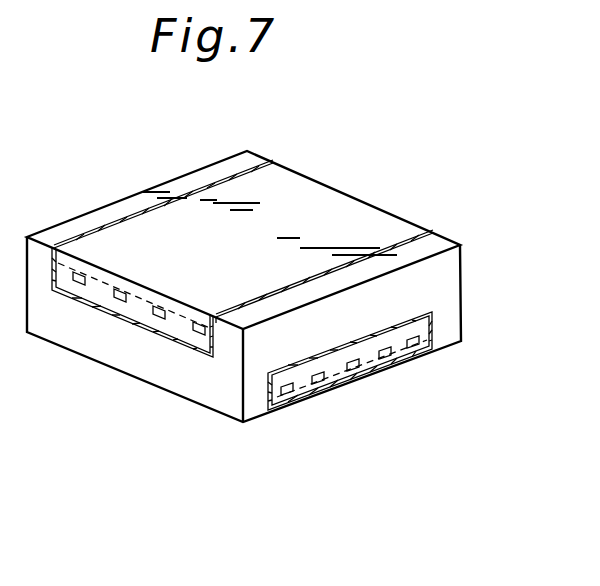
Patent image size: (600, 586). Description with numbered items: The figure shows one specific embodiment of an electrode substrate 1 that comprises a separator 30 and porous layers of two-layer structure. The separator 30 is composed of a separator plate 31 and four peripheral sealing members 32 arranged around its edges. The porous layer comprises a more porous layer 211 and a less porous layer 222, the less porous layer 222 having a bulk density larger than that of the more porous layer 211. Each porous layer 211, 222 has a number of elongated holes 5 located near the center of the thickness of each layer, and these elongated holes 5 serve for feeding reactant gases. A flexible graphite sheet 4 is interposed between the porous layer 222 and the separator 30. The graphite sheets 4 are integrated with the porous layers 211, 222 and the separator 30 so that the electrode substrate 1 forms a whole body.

The electrode substrate 1 is at (420, 213).
The flexible graphite sheet 4 is at (268, 163).
The elongated holes 5 is at (118, 292).
The separator 30 is at (468, 287).
The separator plate 31 is at (147, 363).
The peripheral sealing members 32 is at (137, 198).
The more porous layer 211 is at (157, 302).
The less porous layer 222 is at (98, 292).